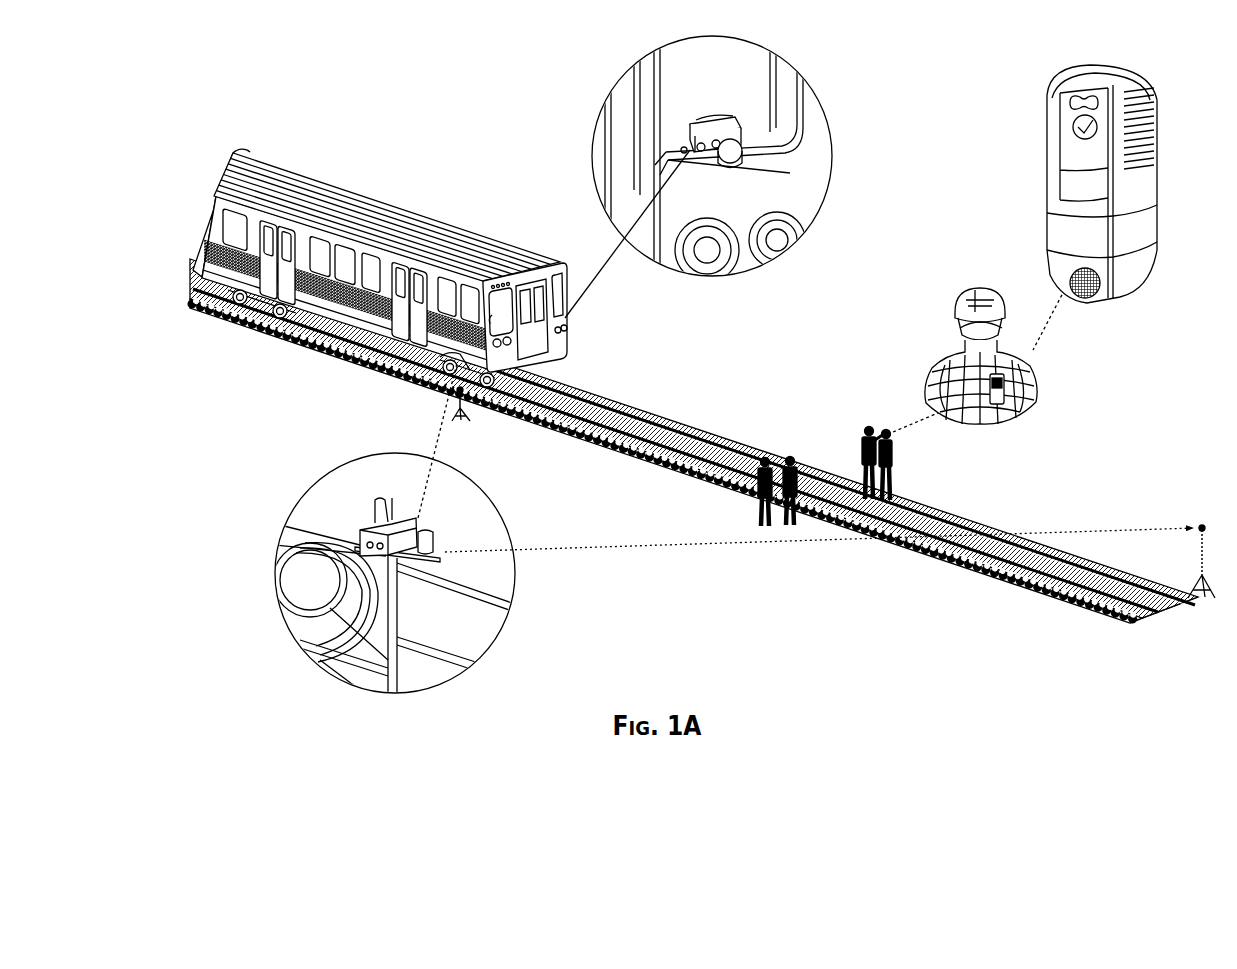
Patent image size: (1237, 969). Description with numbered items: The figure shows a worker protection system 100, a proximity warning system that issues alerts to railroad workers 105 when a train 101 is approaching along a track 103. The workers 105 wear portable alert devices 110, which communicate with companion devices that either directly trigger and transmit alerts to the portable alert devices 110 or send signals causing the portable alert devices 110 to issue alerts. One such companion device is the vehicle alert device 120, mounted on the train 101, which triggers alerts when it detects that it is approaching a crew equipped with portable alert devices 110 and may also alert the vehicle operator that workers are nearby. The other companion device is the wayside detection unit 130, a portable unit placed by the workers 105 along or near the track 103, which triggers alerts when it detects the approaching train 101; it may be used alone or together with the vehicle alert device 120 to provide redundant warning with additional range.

The worker protection system 100 is at (327, 87).
The train 101 is at (424, 216).
The track 103 is at (617, 408).
The worker(s) 105 is at (773, 438).
The portable alert device (PAD) 110 is at (1131, 220).
The vehicle alert device (VAD) 120 is at (740, 128).
The wayside detection unit (WDU) 130 is at (365, 510).